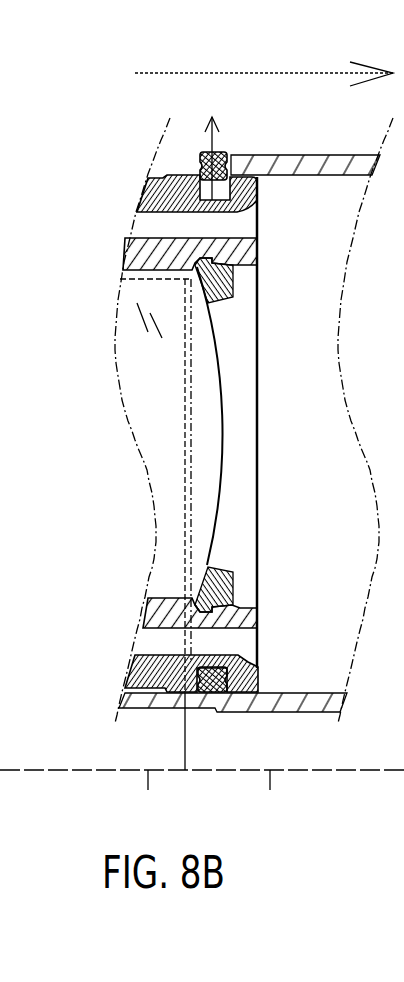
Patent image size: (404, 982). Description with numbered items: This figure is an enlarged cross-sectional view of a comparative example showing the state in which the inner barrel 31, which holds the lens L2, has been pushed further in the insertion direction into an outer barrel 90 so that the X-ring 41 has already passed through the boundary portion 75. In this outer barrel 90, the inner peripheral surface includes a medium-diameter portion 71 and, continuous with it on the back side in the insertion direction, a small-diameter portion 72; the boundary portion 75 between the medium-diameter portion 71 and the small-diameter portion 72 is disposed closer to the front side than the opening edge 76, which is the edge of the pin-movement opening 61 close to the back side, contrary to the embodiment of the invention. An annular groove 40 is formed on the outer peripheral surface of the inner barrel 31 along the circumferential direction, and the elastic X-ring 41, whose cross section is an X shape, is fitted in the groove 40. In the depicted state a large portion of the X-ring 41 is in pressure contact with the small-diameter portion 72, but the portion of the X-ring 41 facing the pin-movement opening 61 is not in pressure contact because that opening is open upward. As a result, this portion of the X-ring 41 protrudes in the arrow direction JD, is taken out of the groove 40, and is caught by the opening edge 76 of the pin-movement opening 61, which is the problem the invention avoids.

The inner barrel 31 is at (176, 177).
The arrow direction JD is at (213, 138).
The outer barrel 90 is at (310, 157).
The opening edge 76 is at (234, 218).
The pin-movement opening 61 is at (238, 258).
The boundary portion 75 is at (193, 332).
The lens L2 is at (172, 555).
The X-ring 41 is at (203, 694).
The annular groove 40 is at (236, 694).
The medium-diameter portion 71 is at (147, 802).
The small-diameter portion 72 is at (269, 802).